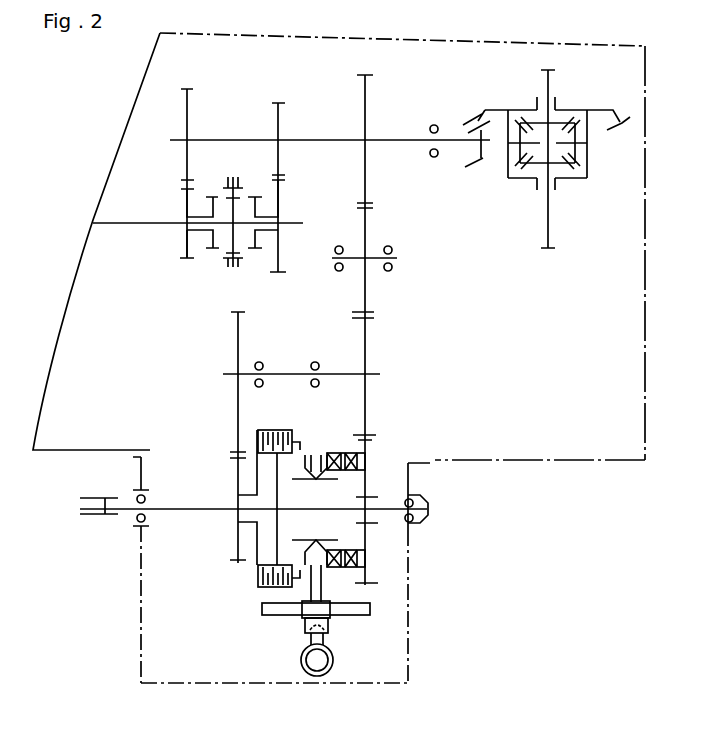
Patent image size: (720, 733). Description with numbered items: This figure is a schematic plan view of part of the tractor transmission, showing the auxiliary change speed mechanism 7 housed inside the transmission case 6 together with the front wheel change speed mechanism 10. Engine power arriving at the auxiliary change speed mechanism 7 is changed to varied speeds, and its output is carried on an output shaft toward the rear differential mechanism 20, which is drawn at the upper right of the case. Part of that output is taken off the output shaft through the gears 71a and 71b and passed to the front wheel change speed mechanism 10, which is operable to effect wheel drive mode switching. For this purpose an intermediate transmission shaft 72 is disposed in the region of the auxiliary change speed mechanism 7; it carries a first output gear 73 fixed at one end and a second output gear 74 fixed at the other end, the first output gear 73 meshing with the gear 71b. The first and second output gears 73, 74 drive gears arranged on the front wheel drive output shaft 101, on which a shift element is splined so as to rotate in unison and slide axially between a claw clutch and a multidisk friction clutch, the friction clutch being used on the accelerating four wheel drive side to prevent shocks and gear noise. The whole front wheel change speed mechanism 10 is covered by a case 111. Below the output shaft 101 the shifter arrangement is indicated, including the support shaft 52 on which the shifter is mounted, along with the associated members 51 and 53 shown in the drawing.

The transmission case 6 is at (645, 313).
The auxiliary change speed mechanism 7 is at (128, 188).
The front wheel change speed mechanism 10 is at (398, 553).
The rear differential mechanism 20 is at (567, 190).
The shift rod 51 is at (318, 587).
The support shaft 52 is at (275, 612).
The ring member 53 is at (331, 648).
The gear 71a is at (363, 109).
The gear 71b is at (365, 225).
The intermediate transmission shaft 72 is at (235, 375).
The first output gear 73 is at (363, 332).
The second output gear 74 is at (236, 330).
The front wheel drive output shaft 101 is at (195, 510).
The case 111 is at (409, 676).